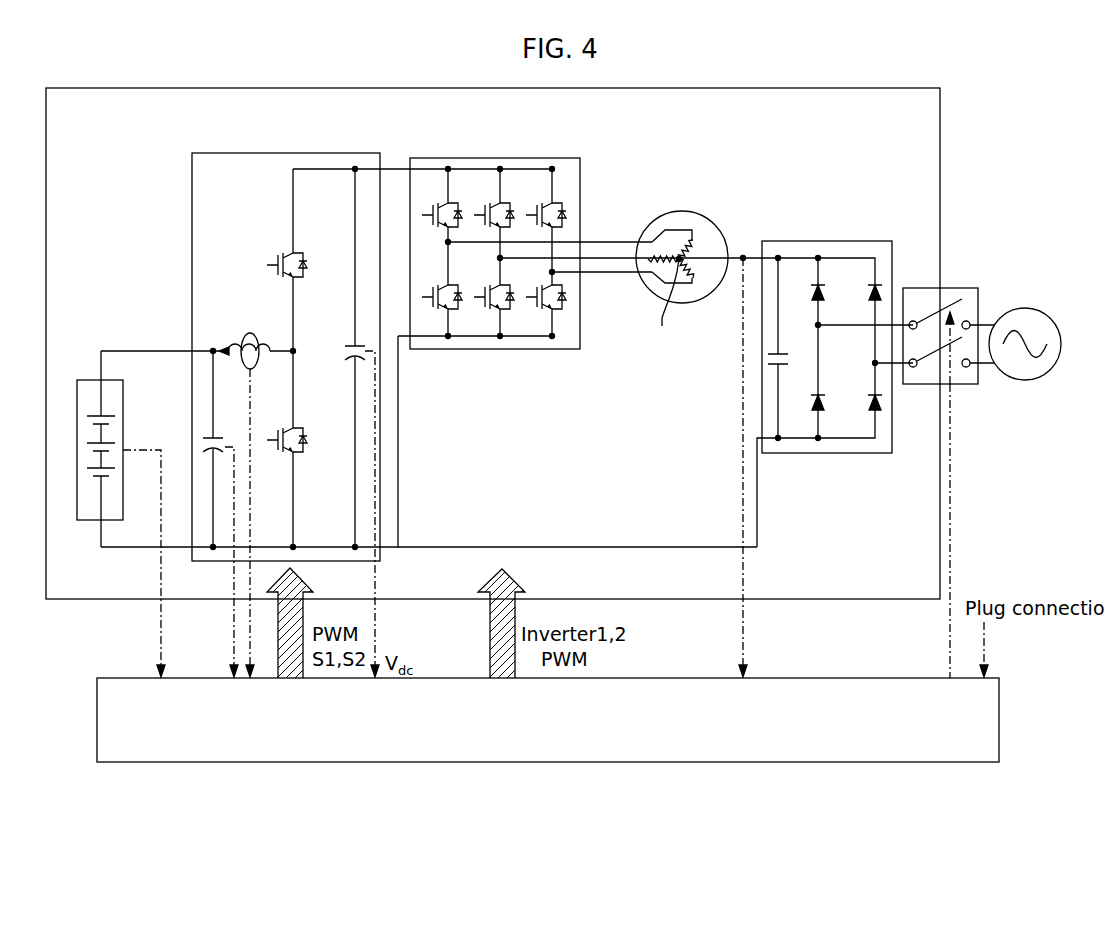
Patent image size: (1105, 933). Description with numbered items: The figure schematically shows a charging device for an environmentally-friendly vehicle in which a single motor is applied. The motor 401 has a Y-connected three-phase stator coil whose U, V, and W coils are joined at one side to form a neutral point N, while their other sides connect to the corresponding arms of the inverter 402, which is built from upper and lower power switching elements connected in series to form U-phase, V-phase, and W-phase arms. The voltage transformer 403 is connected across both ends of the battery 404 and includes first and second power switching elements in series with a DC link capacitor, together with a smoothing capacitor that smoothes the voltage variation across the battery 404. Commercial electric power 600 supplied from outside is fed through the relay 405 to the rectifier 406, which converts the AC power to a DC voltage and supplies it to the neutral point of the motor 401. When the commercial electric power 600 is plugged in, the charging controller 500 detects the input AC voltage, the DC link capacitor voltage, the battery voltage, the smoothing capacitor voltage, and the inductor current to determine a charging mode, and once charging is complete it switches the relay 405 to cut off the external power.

The motor 401 is at (683, 212).
The inverter 402 is at (489, 158).
The voltage transformer 403 is at (272, 153).
The battery 404 is at (84, 378).
The relay 405 is at (963, 386).
The rectifier 406 is at (828, 241).
The charging controller 500 is at (999, 718).
The commercial electric power 600 is at (1023, 308).